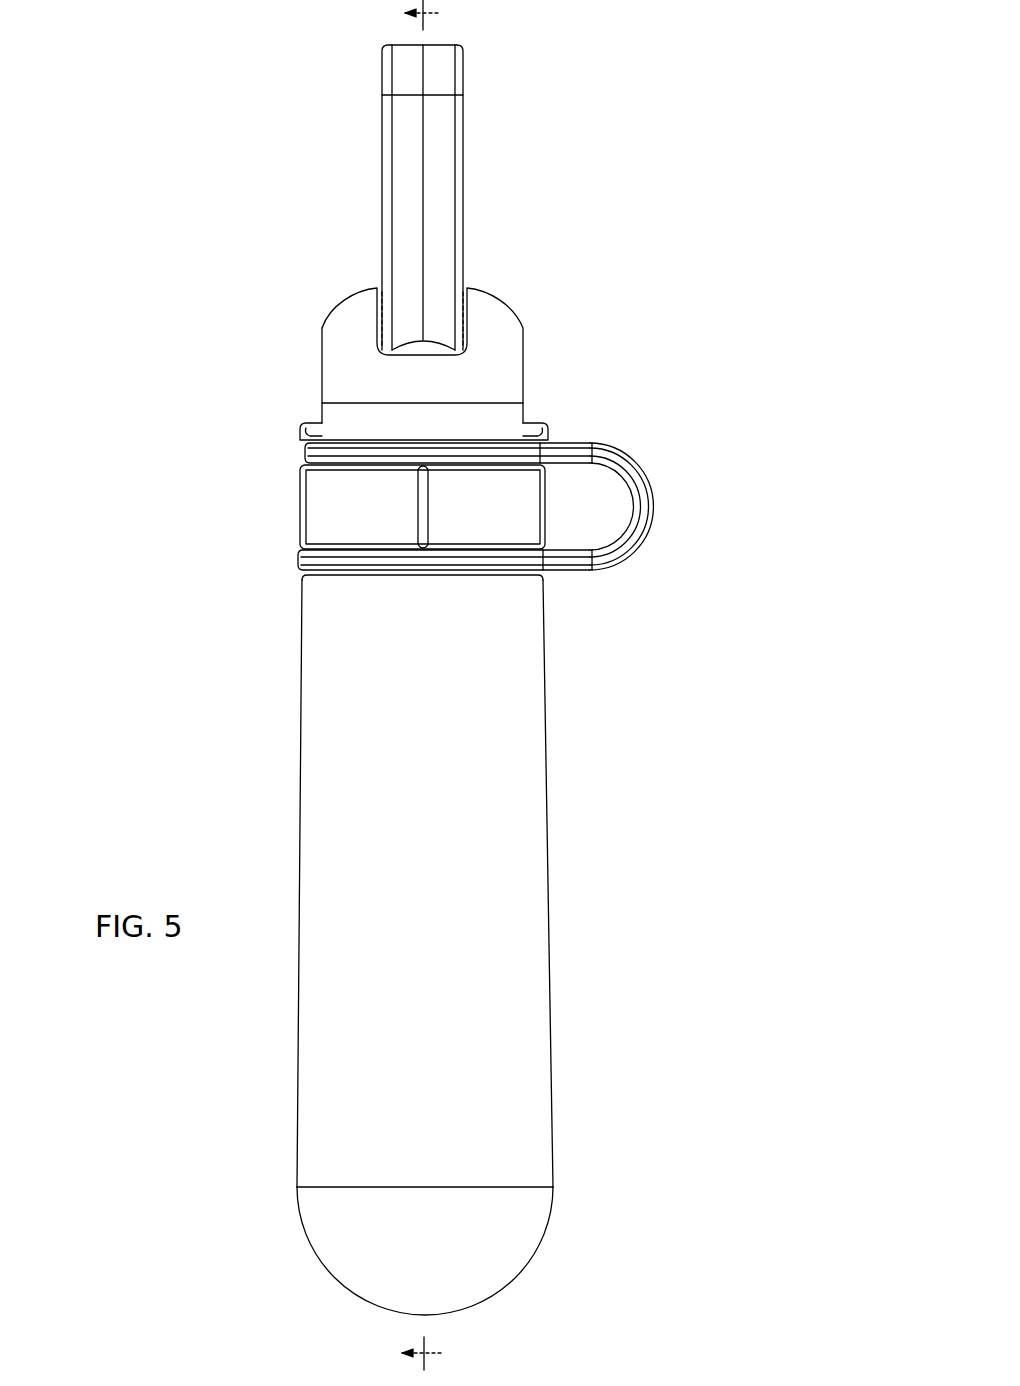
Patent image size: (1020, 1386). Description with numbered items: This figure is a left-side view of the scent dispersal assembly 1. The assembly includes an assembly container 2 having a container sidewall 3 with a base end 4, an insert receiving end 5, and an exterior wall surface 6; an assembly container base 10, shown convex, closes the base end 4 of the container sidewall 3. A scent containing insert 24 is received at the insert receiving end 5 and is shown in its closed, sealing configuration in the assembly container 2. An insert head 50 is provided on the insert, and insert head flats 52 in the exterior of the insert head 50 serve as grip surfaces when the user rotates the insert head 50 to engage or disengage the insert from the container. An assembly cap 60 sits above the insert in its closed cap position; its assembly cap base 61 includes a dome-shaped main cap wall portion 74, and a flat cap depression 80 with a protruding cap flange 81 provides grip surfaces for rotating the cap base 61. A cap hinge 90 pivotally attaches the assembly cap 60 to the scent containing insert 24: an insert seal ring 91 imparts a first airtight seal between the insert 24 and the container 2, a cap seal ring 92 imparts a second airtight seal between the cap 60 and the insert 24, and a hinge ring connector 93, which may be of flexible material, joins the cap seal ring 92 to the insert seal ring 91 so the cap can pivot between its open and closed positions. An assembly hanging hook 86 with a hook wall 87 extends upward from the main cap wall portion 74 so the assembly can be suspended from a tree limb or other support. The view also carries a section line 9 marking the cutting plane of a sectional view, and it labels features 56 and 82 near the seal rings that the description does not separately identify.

The scent dispersal assembly 1 is at (180, 140).
The assembly container 2 is at (397, 952).
The container sidewall 3 is at (500, 838).
The base end 4 is at (323, 1187).
The insert receiving end 5 is at (513, 530).
The exterior wall surface 6 is at (443, 829).
The section line 9 is at (434, 686).
The assembly container base 10 is at (485, 1262).
The scent containing insert 24 is at (369, 548).
The insert head 50 is at (297, 495).
The insert head flats 52 is at (387, 522).
The lower ring 56 is at (300, 553).
The assembly cap 60 is at (427, 347).
The assembly cap base 61 is at (522, 322).
The main cap wall portion 74 is at (350, 374).
The cap depression 80 is at (320, 392).
The cap flange 81 is at (300, 435).
The ring groove 82 is at (303, 452).
The assembly hanging hook 86 is at (462, 178).
The hook wall 87 is at (440, 212).
The cap hinge 90 is at (643, 455).
The insert seal ring 91 is at (452, 517).
The cap seal ring 92 is at (467, 460).
The hinge ring connector 93 is at (640, 497).